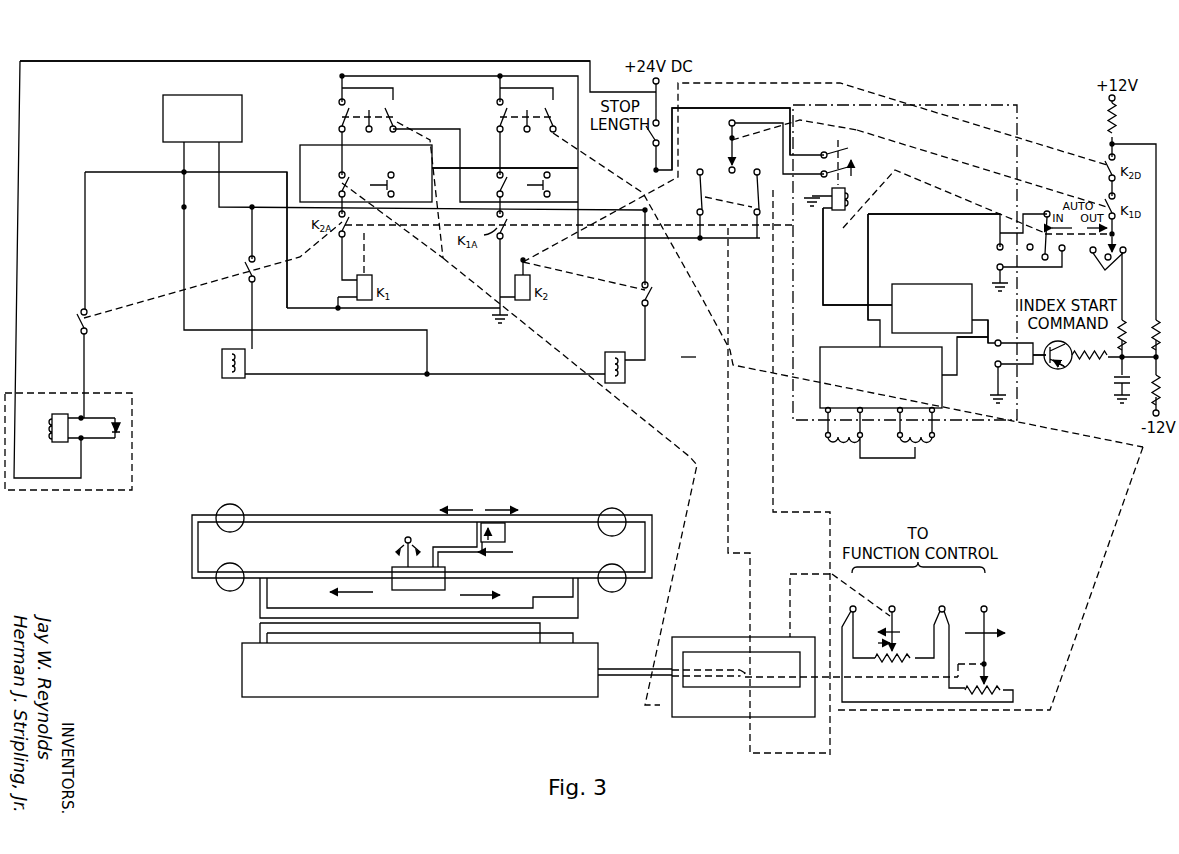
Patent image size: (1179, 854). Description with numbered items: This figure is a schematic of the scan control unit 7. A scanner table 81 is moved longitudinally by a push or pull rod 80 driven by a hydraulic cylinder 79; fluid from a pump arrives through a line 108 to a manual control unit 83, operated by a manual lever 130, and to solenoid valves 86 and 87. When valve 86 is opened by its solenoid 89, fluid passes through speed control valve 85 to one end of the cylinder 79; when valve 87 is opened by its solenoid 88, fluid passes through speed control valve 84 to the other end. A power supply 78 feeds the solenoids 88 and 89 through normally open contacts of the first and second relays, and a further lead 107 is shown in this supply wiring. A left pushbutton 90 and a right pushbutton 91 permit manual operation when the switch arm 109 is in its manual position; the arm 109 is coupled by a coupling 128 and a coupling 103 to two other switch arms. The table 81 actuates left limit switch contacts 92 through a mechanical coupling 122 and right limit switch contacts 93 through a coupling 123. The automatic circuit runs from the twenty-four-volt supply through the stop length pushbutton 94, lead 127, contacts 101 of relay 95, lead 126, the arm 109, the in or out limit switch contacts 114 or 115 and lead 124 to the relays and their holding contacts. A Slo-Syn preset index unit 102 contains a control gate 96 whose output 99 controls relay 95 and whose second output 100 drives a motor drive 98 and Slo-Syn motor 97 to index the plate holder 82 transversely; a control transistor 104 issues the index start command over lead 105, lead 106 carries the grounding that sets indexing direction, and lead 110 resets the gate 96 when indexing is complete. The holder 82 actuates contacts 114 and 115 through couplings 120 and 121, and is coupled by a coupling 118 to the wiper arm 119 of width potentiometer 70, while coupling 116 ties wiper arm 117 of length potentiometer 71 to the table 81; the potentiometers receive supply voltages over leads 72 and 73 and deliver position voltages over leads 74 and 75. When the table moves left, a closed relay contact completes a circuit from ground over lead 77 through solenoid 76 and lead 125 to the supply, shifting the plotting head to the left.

The scan control unit 7 is at (688, 348).
The width potentiometer 70 is at (897, 672).
The length potentiometer 71 is at (996, 703).
The lead 72 is at (921, 646).
The lead 73 is at (945, 600).
The lead 74 is at (894, 600).
The lead 75 is at (988, 600).
The solenoid 76 is at (60, 413).
The lead 77 is at (85, 362).
The power supply 78 is at (242, 106).
The hydraulic cylinder 79 is at (431, 690).
The push or pull rod 80 is at (625, 680).
The scanner table 81 is at (708, 720).
The plate holder 82 is at (742, 650).
The manual control unit 83 is at (445, 573).
The speed control valve 84 is at (243, 571).
The speed control valve 85 is at (598, 575).
The solenoid valve 86 is at (601, 509).
The solenoid valve 87 is at (243, 508).
The solenoid 88 is at (245, 367).
The solenoid 89 is at (626, 376).
The left pushbutton 90 is at (384, 181).
The right pushbutton 91 is at (543, 186).
The left limit switch contacts 92 is at (393, 113).
The right limit switch contacts 93 is at (553, 118).
The stop length pushbutton switch 94 is at (651, 137).
The relay 95 is at (838, 212).
The control gate 96 is at (927, 285).
The Slo-Syn motor 97 is at (825, 437).
The motor drive 98 is at (943, 395).
The output 99 is at (828, 305).
The second output 100 is at (885, 318).
The contacts 101 is at (853, 163).
The Slo-Syn preset index unit 102 is at (988, 108).
The coupling 103 is at (1080, 236).
The control transistor 104 is at (1055, 368).
The lead 105 is at (1036, 366).
The lead 106 is at (908, 216).
The conductor 107 is at (287, 194).
The line 108 is at (496, 542).
The switch arm 109 is at (729, 124).
The lead 110 is at (960, 349).
The limit switch contacts 114 is at (699, 198).
The limit switch contacts 115 is at (756, 198).
The coupling 116 is at (880, 678).
The wiper arm 117 is at (991, 654).
The coupling 118 is at (828, 573).
The wiper arm 119 is at (879, 644).
The mechanical coupling 120 is at (728, 419).
The mechanical coupling 121 is at (773, 419).
The mechanical coupling 122 is at (690, 457).
The mechanical coupling 123 is at (1093, 441).
The lead 124 is at (580, 190).
The lead 125 is at (535, 62).
The lead 126 is at (813, 176).
The lead 127 is at (746, 107).
The coupling 128 is at (864, 131).
The manual lever 130 is at (404, 552).